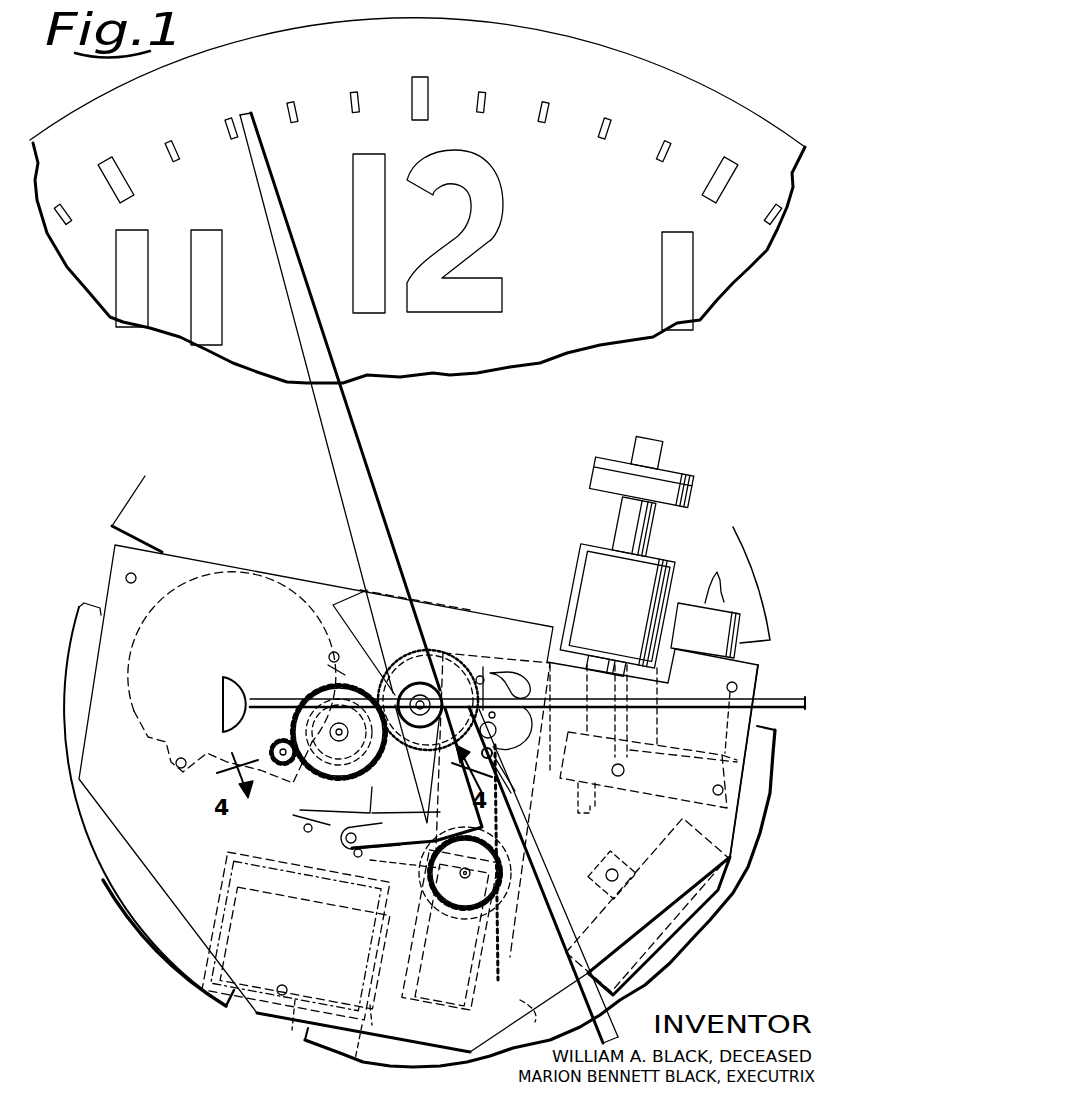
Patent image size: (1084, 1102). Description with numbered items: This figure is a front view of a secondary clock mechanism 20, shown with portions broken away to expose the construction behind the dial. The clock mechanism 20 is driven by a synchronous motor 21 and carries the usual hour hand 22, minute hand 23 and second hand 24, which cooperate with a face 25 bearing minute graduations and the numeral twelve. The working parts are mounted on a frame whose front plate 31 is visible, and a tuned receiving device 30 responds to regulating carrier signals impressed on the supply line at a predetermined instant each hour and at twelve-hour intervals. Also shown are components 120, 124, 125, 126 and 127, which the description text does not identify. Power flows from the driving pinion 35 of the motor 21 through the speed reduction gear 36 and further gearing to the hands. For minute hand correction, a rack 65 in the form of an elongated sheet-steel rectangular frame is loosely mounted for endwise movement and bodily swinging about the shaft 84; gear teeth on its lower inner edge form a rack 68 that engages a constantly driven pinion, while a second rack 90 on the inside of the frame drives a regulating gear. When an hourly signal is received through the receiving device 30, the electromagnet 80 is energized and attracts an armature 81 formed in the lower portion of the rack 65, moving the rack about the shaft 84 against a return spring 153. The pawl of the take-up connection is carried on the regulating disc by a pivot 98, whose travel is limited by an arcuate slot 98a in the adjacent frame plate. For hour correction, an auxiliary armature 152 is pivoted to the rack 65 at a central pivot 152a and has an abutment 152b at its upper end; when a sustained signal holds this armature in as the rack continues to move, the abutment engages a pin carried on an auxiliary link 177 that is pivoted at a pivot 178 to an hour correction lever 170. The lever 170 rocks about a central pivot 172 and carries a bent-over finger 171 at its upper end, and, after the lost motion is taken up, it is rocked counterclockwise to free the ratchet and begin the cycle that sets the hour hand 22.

The clock mechanism 20 is at (160, 978).
The synchronous motor 21 is at (216, 677).
The hour hand 22 is at (545, 904).
The minute hand 23 is at (345, 418).
The second hand 24 is at (788, 698).
The face 25 is at (96, 283).
The tuned receiving device 30 is at (722, 564).
The front plate 31 is at (187, 560).
The driving pinion 35 is at (280, 764).
The speed reduction gear 36 is at (292, 730).
The rack 65 is at (530, 1018).
The rack 68 is at (482, 955).
The electromagnet 80 is at (292, 1030).
The armature 81 is at (361, 1018).
The shaft 84 is at (498, 728).
The rack 90 is at (495, 862).
The pivot 98 is at (496, 758).
The arcuate slot 98a is at (504, 672).
The switch block 120 is at (743, 622).
The knob 124 is at (700, 464).
The disc 125 is at (690, 492).
The solenoid body 126 is at (578, 582).
The bracket 127 is at (602, 808).
The auxiliary armature 152 is at (362, 1064).
The central pivot 152a is at (428, 972).
The abutment 152b is at (380, 882).
The return spring 153 is at (374, 862).
The hour correction lever 170 is at (402, 803).
The finger 171 is at (330, 668).
The central pivot 172 is at (315, 808).
The auxiliary link 177 is at (392, 828).
The pivot 178 is at (343, 843).